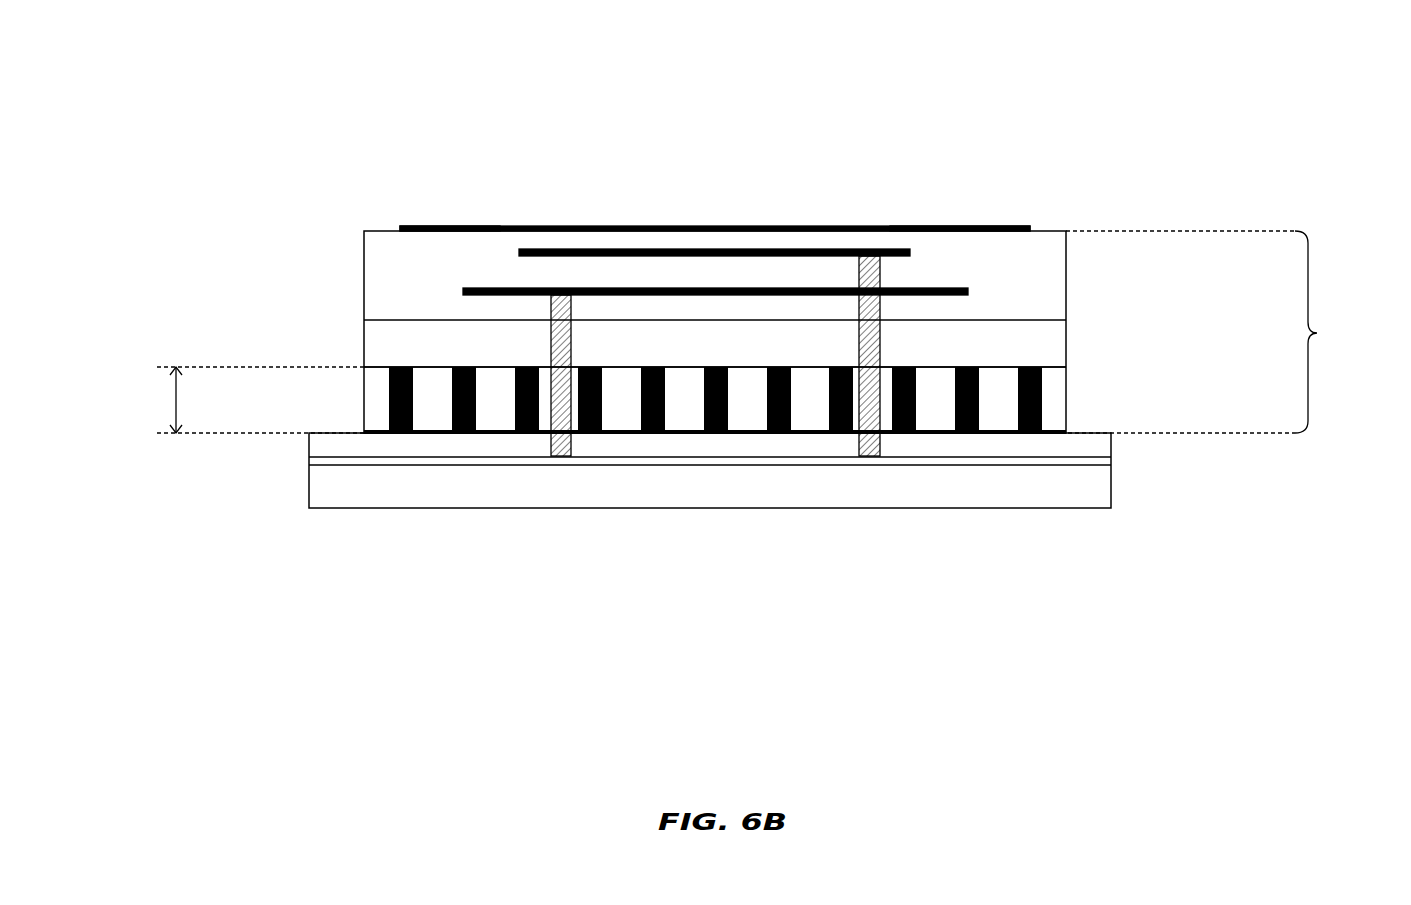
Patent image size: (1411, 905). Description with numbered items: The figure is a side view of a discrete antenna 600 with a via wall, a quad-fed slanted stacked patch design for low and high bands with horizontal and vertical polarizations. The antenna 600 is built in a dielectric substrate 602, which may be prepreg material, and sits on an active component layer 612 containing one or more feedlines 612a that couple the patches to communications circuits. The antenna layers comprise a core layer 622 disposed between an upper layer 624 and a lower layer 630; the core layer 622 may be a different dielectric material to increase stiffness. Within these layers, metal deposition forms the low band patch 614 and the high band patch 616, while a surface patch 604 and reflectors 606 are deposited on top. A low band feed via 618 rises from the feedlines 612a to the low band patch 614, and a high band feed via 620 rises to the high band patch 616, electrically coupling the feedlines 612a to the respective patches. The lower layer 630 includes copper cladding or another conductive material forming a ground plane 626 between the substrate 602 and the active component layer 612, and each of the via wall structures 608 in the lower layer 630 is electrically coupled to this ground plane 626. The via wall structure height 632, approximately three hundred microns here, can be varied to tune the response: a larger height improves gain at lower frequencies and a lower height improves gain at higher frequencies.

The discrete antenna 600 is at (208, 76).
The dielectric substrate 602 is at (1317, 333).
The surface patch 604 is at (700, 226).
The reflectors 606 is at (493, 226).
The via wall structures 608 is at (1040, 400).
The active component layer 612 is at (1111, 508).
The feedlines 612a is at (309, 463).
The low band patch 614 is at (463, 291).
The high band patch 616 is at (910, 253).
The low band feed via 618 is at (556, 456).
The high band feed via 620 is at (870, 456).
The core layer 622 is at (363, 343).
The upper layer 624 is at (1066, 282).
The ground plane 626 is at (1068, 432).
The lower layer 630 is at (363, 405).
The via wall structure height 632 is at (175, 403).